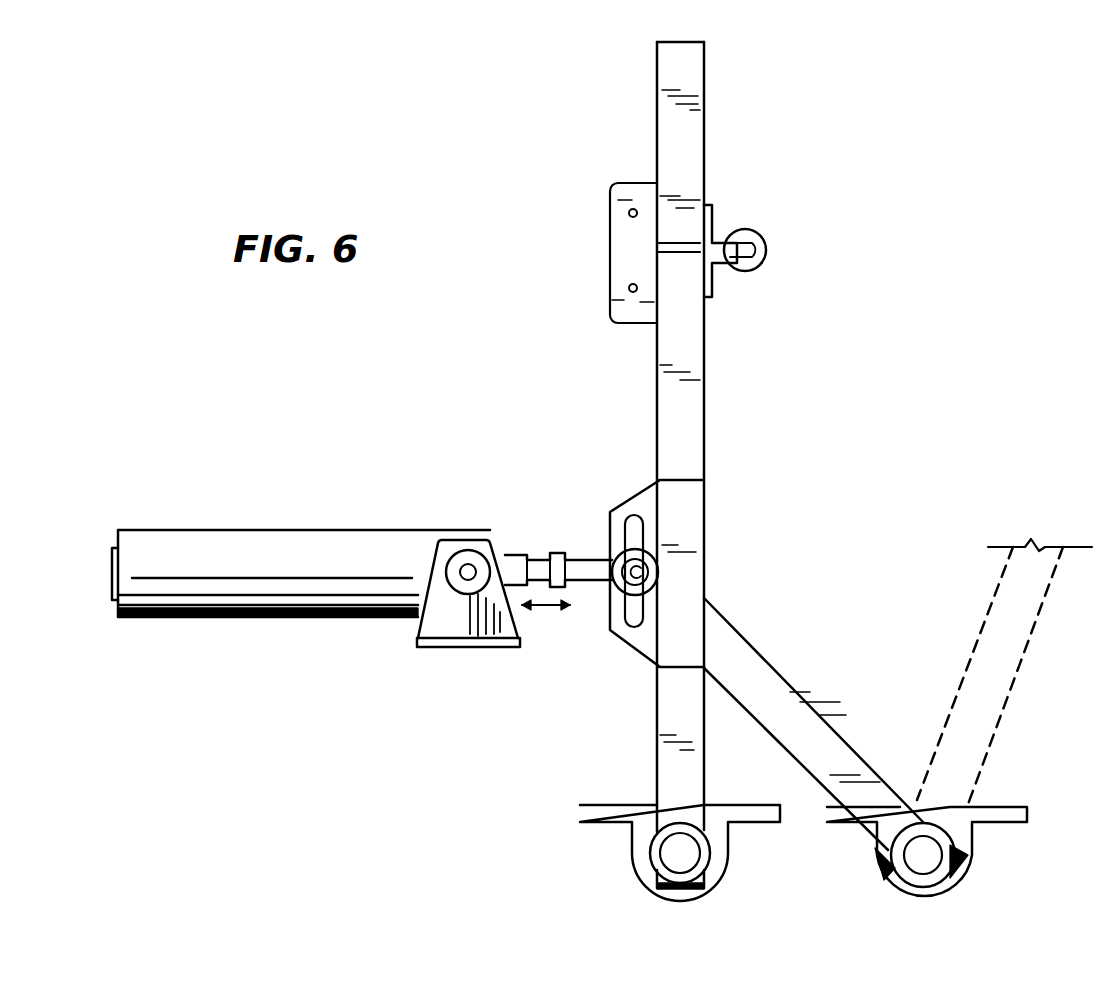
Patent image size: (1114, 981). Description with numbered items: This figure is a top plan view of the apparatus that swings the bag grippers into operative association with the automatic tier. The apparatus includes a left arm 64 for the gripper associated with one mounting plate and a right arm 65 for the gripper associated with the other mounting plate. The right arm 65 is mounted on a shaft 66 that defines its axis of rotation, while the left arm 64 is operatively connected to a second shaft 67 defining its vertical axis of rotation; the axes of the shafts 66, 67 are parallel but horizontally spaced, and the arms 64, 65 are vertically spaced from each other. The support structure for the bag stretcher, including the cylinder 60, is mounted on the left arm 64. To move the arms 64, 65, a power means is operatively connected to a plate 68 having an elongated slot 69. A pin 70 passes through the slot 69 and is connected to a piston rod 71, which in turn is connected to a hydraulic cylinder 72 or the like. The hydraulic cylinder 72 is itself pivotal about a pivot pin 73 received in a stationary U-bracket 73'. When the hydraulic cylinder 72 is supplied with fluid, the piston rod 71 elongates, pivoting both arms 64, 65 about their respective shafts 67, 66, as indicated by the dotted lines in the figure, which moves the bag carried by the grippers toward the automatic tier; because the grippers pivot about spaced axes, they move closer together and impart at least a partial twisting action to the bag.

The cylinder 60 is at (767, 262).
The left arm 64 is at (704, 410).
The right arm 65 is at (780, 690).
The shaft 66 is at (915, 857).
The second shaft 67 is at (690, 862).
The plate 68 is at (650, 493).
The elongated slot 69 is at (638, 622).
The pin 70 is at (618, 582).
The piston rod 71 is at (513, 560).
The hydraulic cylinder 72 is at (258, 542).
The pivot pin 73 is at (468, 559).
The stationary U-bracket 73' is at (463, 663).